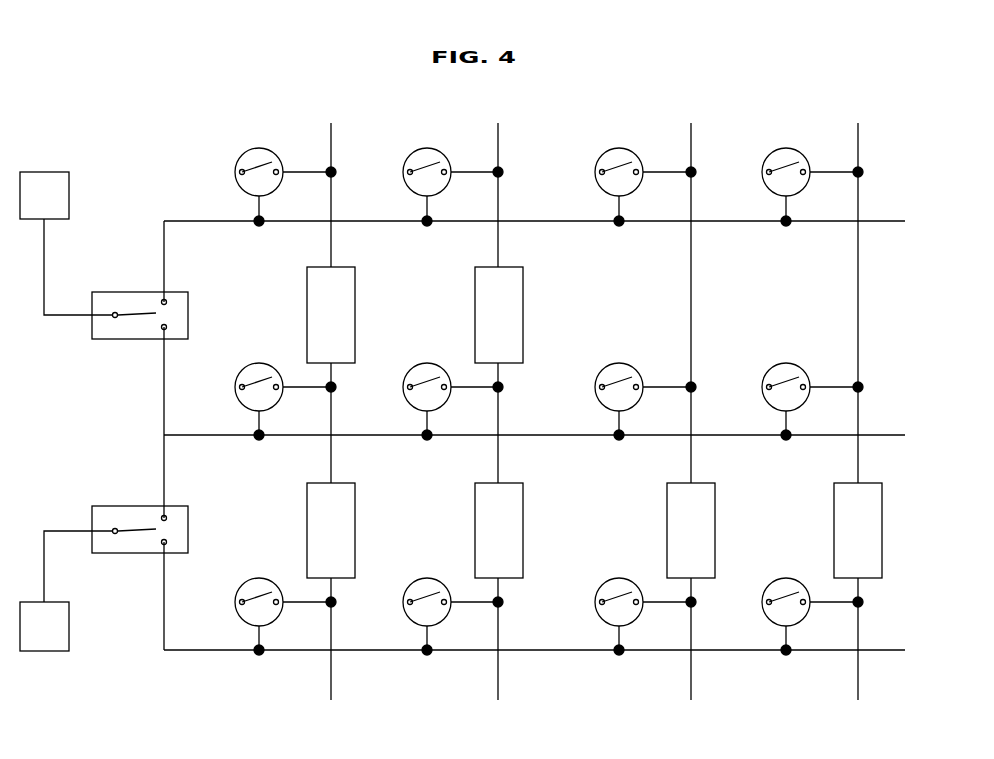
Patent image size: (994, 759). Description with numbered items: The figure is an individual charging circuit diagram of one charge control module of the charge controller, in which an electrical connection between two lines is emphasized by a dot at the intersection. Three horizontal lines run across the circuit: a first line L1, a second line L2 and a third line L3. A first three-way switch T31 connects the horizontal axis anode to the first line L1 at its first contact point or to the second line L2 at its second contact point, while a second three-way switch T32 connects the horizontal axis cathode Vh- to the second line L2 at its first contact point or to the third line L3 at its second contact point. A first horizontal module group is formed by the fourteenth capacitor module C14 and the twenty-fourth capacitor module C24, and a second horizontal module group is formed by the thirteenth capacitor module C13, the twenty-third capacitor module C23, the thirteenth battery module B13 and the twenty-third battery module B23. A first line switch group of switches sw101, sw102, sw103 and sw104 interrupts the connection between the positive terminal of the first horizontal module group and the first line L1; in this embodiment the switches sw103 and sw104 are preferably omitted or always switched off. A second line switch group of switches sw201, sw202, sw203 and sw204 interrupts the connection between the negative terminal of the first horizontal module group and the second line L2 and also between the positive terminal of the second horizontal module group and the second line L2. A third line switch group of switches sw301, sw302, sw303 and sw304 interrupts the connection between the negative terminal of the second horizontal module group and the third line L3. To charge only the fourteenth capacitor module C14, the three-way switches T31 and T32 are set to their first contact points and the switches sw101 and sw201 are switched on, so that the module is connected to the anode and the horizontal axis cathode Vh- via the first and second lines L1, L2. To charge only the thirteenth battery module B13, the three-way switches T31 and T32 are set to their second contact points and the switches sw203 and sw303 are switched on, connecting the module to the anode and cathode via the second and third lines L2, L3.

The one-hundred-and-first switch sw101 is at (283, 175).
The one-hundred-and-second switch sw102 is at (451, 175).
The one-hundred-and-third switch sw103 is at (643, 175).
The one-hundred-and-fourth switch sw104 is at (810, 175).
The two-hundred-and-first switch sw201 is at (283, 389).
The two-hundred-and-second switch sw202 is at (451, 389).
The two-hundred-and-third switch sw203 is at (643, 389).
The two-hundred-and-fourth switch sw204 is at (810, 389).
The three-hundred-and-first switch sw301 is at (283, 604).
The three-hundred-and-second switch sw302 is at (451, 604).
The three-hundred-and-third switch sw303 is at (643, 604).
The three-hundred-and-fourth switch sw304 is at (810, 604).
The fourteenth capacitor module C14 is at (331, 315).
The twenty-fourth capacitor module C24 is at (499, 315).
The thirteenth capacitor module C13 is at (331, 530).
The twenty-third capacitor module C23 is at (499, 530).
The thirteenth battery module B13 is at (691, 530).
The twenty-third battery module B23 is at (858, 530).
The first three-way switch T31 is at (138, 332).
The second three-way switch T32 is at (138, 547).
The horizontal axis cathode Vh- is at (66, 591).
The first line L1 is at (549, 221).
The second line L2 is at (549, 435).
The third line L3 is at (549, 650).